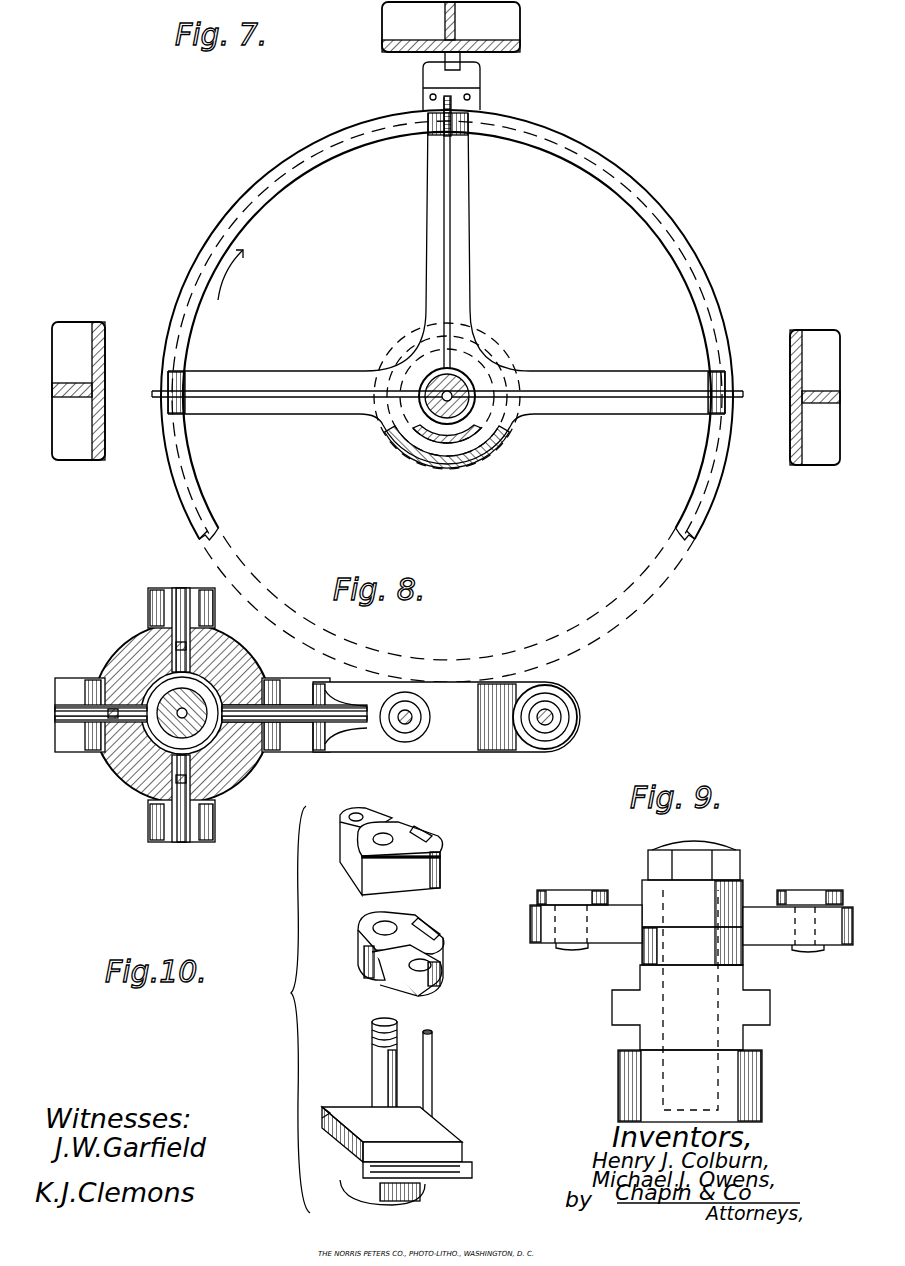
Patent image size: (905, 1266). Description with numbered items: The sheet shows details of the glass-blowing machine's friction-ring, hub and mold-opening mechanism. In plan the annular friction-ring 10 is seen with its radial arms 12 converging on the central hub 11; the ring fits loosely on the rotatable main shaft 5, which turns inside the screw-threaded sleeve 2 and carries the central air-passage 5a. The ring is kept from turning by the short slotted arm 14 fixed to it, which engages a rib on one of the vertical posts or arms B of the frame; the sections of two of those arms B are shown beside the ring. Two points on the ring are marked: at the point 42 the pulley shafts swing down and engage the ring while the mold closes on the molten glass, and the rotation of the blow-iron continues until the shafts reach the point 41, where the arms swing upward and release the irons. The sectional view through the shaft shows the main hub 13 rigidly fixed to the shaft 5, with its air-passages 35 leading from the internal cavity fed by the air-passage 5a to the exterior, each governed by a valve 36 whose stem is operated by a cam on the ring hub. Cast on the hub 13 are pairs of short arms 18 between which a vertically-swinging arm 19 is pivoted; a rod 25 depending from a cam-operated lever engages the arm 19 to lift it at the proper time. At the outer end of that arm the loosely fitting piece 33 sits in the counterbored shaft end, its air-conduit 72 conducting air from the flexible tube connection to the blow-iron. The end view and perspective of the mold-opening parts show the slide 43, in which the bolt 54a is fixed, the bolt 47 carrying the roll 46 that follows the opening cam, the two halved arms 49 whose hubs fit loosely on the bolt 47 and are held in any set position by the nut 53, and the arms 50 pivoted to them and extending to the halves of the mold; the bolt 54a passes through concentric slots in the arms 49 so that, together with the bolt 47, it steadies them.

In FIG. 7, the annular friction-ring 10 is at (678, 240).
In FIG. 7, the arms 12 is at (427, 232).
In FIG. 7, the short slotted arm 14 is at (422, 77).
In FIG. 7, the screw-threaded sleeve 2 is at (452, 372).
In FIG. 7, the rotatable shaft 5 is at (466, 380).
In FIG. 7, the central air-passage 5a is at (462, 404).
In FIG. 7, the central hub 11 is at (412, 446).
In FIG. 7, the posts or arms B is at (520, 50).
In FIG. 7, the point on ring 41 is at (690, 538).
In FIG. 7, the point on ring 42 is at (210, 524).
In FIG. 8, the air-passages 35 is at (150, 663).
In FIG. 8, the main hub 13 is at (232, 660).
In FIG. 8, the short arms 18 is at (190, 588).
In FIG. 8, the valve 36 is at (186, 645).
In FIG. 8, the vertically-swinging arm 19 is at (350, 745).
In FIG. 8, the rod 25 is at (410, 722).
In FIG. 8, the piece 33 is at (548, 712).
In FIG. 8, the air-conduit 72 is at (556, 717).
In FIG. 9, the bolt 47 is at (698, 844).
In FIG. 10, the bolt 47 is at (372, 1060).
In FIG. 9, the nut 53 is at (738, 862).
In FIG. 9, the arms 50 is at (589, 890).
In FIG. 9, the halved arms 49 is at (691, 925).
In FIG. 10, the halved arms 49 is at (436, 838).
In FIG. 9, the slide 43 is at (691, 1000).
In FIG. 10, the slide 43 is at (338, 1107).
In FIG. 9, the roll 46 is at (690, 1086).
In FIG. 10, the roll 46 is at (348, 1178).
In FIG. 10, the bolt 54a is at (432, 1048).